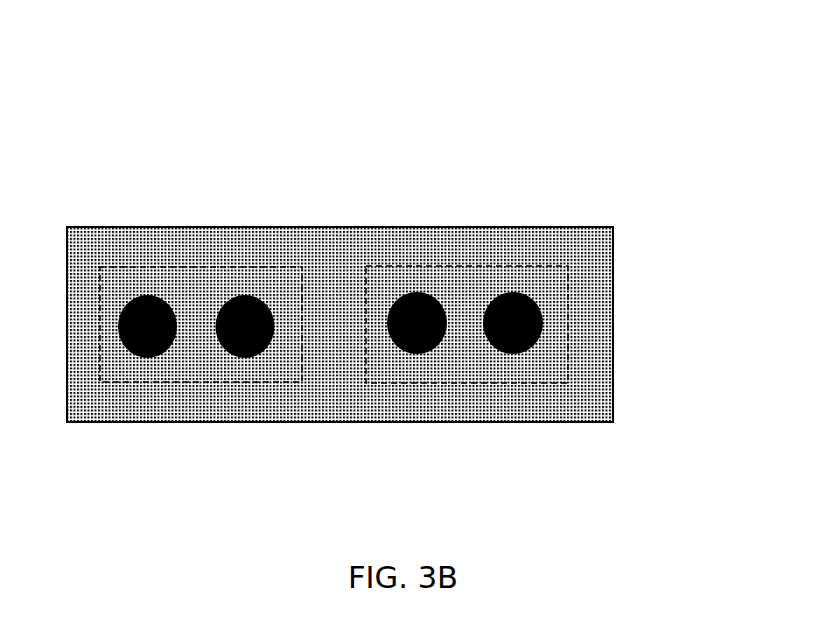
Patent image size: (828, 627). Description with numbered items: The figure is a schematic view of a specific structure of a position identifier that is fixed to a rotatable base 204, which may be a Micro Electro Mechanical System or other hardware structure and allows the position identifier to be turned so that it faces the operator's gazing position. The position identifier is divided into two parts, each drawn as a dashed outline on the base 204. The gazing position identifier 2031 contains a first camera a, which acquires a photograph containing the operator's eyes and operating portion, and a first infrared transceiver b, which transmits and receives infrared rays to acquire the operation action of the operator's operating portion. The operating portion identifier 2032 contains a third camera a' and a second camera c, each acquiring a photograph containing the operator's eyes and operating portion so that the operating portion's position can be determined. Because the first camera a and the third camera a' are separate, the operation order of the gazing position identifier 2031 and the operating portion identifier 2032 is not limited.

The rotatable base 204 is at (585, 257).
The gazing position identifier 2031 is at (133, 267).
The operating portion identifier 2032 is at (492, 265).
The first camera a is at (151, 397).
The first infrared transceiver b is at (258, 357).
The third camera a' is at (422, 395).
The second camera c is at (515, 353).